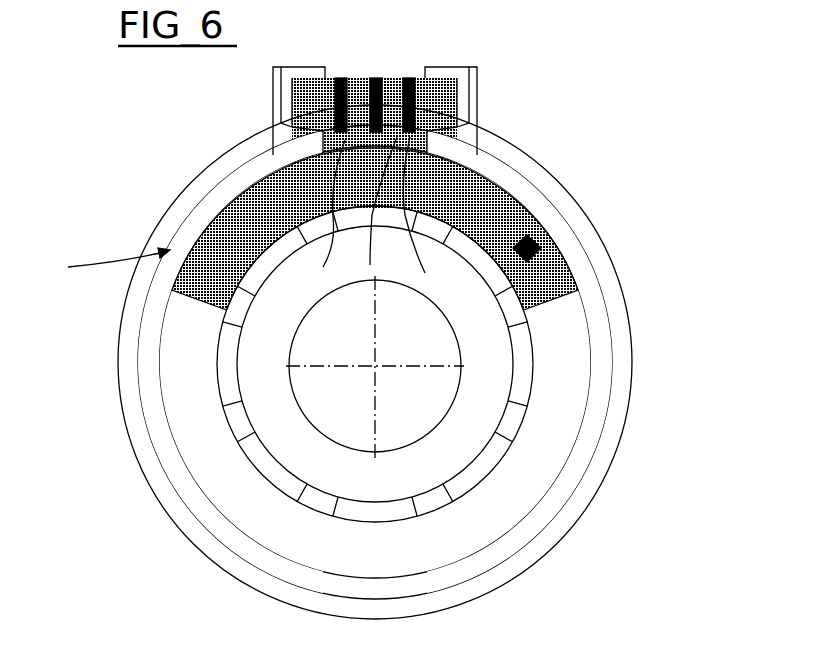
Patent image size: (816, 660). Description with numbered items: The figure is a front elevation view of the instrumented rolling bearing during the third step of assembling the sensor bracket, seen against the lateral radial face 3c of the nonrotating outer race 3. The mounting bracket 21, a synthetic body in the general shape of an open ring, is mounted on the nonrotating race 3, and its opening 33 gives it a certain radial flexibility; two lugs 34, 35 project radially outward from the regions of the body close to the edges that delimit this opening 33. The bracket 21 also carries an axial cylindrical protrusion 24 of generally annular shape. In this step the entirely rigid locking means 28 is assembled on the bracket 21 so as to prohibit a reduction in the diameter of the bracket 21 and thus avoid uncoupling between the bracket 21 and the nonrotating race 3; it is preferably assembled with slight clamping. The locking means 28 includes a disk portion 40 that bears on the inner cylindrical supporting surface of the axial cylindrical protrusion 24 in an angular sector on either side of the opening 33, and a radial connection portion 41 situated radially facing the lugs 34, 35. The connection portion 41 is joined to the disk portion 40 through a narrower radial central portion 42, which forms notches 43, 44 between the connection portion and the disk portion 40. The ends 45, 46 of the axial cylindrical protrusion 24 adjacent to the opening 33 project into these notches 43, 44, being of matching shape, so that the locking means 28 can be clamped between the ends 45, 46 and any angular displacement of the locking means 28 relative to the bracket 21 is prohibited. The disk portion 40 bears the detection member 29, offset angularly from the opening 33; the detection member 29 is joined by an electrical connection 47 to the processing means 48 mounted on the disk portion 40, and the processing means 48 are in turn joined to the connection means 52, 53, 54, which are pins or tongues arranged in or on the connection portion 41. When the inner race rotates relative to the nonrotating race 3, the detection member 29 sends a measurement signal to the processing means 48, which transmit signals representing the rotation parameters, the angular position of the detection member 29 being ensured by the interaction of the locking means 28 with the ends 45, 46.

The nonrotating outer race 3 is at (118, 348).
The lateral radial face 3c is at (137, 293).
The mounting bracket 21 is at (105, 263).
The axial cylindrical protrusion 24 is at (600, 372).
The locking means 28 is at (222, 228).
The detection member 29 is at (580, 283).
The opening 33 is at (375, 75).
The lug 34 is at (273, 70).
The lug 35 is at (478, 75).
The disk portion 40 is at (607, 325).
The radial connection portion 41 is at (430, 108).
The radial central portion 42 is at (430, 128).
The notch 43 is at (273, 157).
The notch 44 is at (503, 168).
The end of the axial cylindrical protrusion 45 is at (312, 153).
The end of the axial cylindrical protrusion 46 is at (517, 207).
The electrical connection 47 is at (542, 249).
The processing means 48 is at (560, 213).
The connection means 52 is at (338, 78).
The connection means 53 is at (358, 78).
The connection means 54 is at (403, 78).